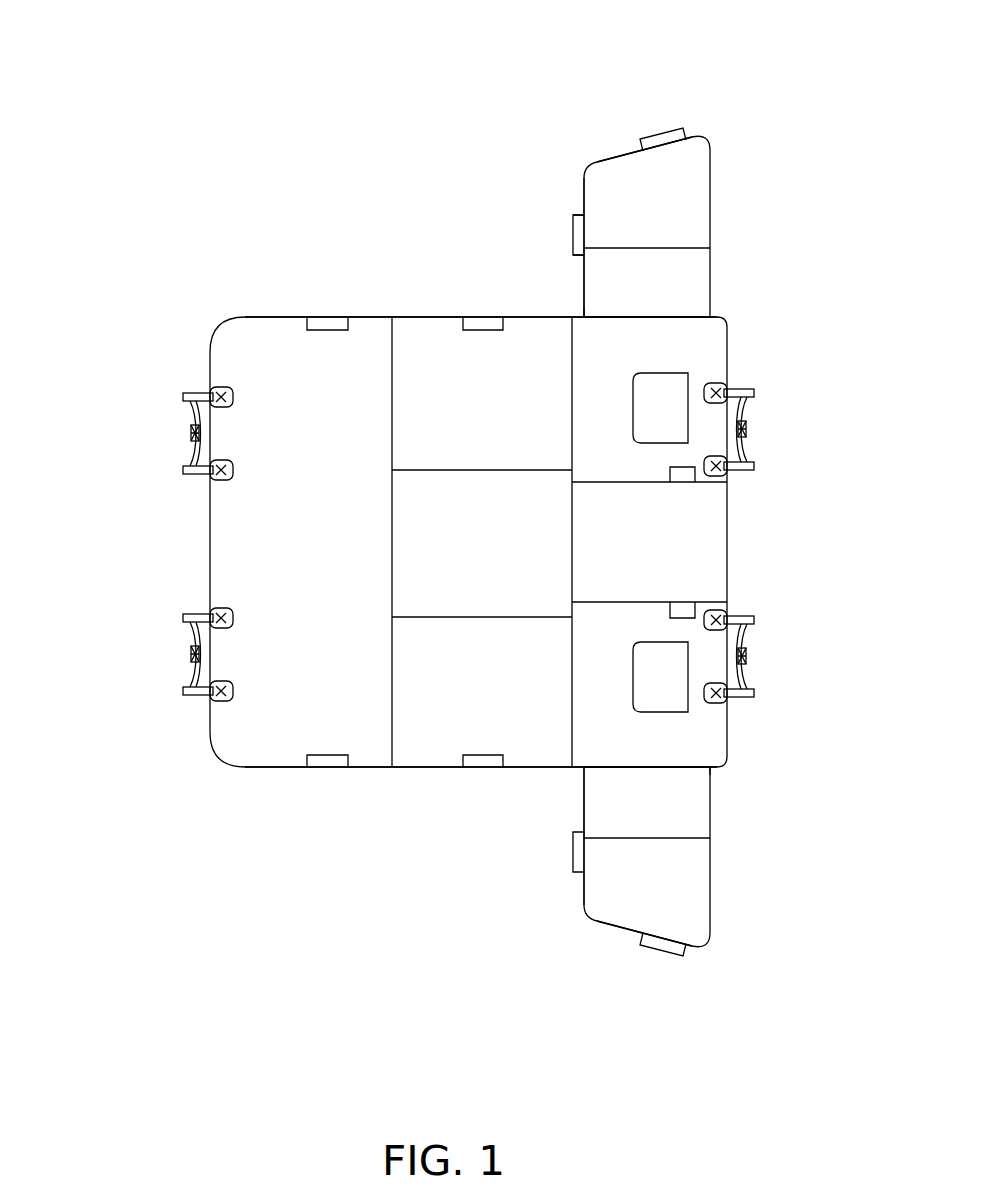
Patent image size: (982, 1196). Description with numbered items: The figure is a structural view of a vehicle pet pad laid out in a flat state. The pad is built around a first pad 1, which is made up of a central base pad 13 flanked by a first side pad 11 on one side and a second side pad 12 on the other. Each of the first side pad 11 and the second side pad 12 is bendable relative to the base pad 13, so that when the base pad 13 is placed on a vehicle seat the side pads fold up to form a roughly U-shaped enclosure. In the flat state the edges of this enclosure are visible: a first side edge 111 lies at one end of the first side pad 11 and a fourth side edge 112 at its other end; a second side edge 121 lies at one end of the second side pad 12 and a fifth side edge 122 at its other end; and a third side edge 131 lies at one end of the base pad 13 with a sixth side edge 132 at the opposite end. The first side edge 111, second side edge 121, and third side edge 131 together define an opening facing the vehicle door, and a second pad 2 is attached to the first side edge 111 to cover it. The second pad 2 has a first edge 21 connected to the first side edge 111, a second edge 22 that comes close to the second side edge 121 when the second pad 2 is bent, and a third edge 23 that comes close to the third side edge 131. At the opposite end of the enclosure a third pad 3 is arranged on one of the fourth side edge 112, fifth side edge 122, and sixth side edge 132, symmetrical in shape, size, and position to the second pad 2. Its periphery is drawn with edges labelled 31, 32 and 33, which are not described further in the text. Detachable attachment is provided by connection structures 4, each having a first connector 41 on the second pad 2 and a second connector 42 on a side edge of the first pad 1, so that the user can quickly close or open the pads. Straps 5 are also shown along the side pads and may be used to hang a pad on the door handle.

The first pad 1 is at (207, 210).
The first side pad 11 is at (680, 548).
The first side edge 111 is at (690, 765).
The fourth side edge 112 is at (655, 318).
The second side pad 12 is at (265, 550).
The second side edge 121 is at (275, 770).
The fifth side edge 122 is at (270, 315).
The base pad 13 is at (435, 386).
The third side edge 131 is at (440, 772).
The sixth side edge 132 is at (445, 312).
The second pad 2 is at (640, 880).
The first edge 21 is at (620, 773).
The second edge 22 is at (625, 935).
The third edge 23 is at (580, 830).
The third pad 3 is at (650, 195).
The upper flap root edge 31 is at (650, 312).
The upper flap slanted edge 32 is at (622, 146).
The upper flap side edge 33 is at (570, 188).
The connection structure 4 is at (177, 1075).
The first connector 41 is at (570, 225).
The second connector 42 is at (320, 318).
The strap 5 is at (190, 398).